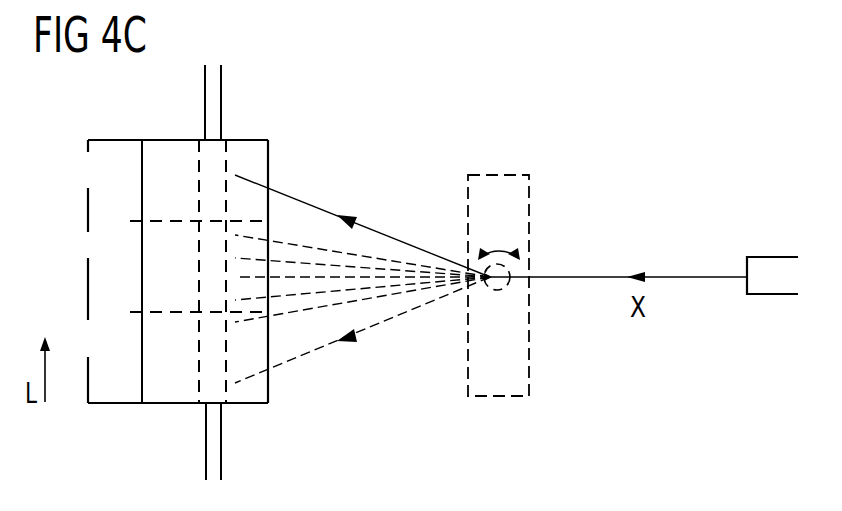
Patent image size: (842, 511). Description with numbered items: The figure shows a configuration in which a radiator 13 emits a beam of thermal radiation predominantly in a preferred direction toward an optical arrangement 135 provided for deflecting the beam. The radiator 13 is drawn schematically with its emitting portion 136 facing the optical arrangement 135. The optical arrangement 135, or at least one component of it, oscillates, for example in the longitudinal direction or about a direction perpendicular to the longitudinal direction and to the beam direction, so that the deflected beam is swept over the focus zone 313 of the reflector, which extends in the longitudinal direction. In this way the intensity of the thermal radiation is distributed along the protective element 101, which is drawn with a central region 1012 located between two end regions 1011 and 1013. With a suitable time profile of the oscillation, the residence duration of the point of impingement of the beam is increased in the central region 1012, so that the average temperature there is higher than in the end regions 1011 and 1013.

The protective element 101 is at (198, 192).
The end region 1011 is at (141, 181).
The central region 1012 is at (141, 264).
The end region 1013 is at (141, 349).
The focus zone 313 is at (215, 441).
The optical arrangement 135 is at (509, 398).
The light exit of light source 136 is at (771, 268).
The radiator 13 is at (653, 294).